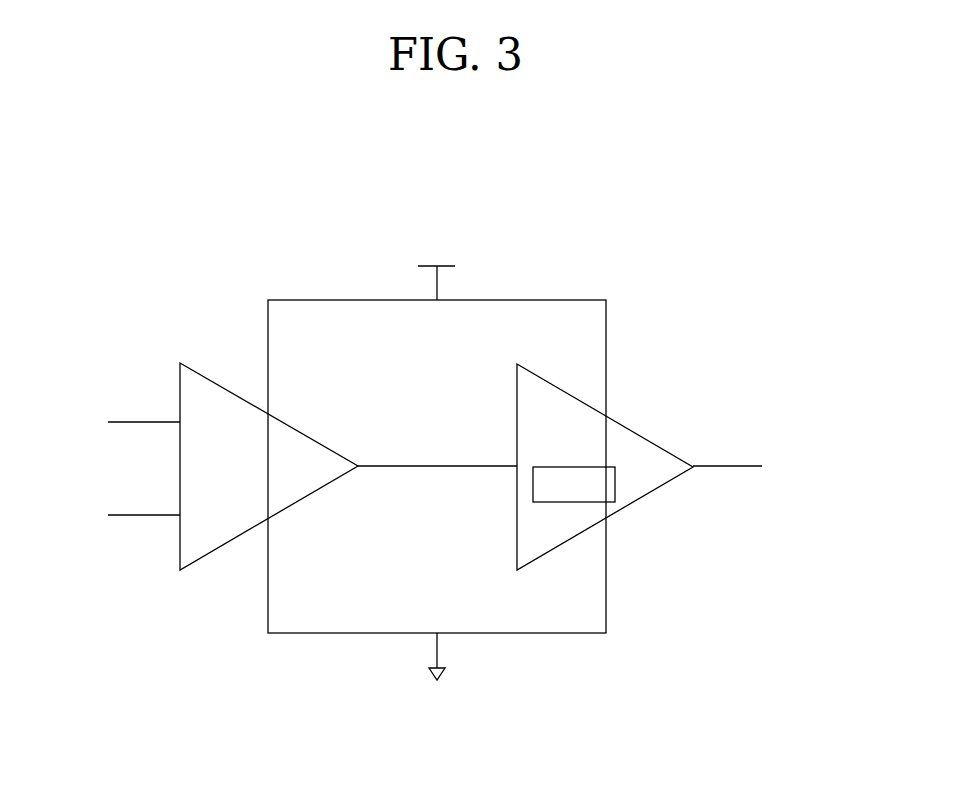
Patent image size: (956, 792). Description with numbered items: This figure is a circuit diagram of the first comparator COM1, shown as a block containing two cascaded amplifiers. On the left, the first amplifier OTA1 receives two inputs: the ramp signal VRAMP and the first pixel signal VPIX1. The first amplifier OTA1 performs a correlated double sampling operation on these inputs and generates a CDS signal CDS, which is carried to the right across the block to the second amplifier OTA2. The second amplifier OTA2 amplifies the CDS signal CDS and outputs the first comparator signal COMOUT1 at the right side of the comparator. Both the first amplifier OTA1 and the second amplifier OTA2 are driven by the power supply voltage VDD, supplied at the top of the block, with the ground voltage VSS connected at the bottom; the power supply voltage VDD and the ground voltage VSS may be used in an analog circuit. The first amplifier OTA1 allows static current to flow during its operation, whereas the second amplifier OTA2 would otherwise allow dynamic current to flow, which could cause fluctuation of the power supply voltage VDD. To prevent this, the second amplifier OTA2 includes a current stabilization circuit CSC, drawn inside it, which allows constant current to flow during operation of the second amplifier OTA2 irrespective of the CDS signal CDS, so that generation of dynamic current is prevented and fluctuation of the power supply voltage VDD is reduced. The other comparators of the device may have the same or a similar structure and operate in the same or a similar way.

The first comparator COM1 is at (697, 195).
The power supply voltage VDD is at (437, 268).
The ground voltage VSS is at (437, 675).
The first amplifier OTA1 is at (269, 466).
The second amplifier OTA2 is at (605, 467).
The current stabilization circuit CSC is at (574, 484).
The CDS signal CDS is at (437, 453).
The first pixel signal VPIX1 is at (110, 423).
The ramp signal VRAMP is at (110, 516).
The first comparator signal COMOUT1 is at (775, 469).